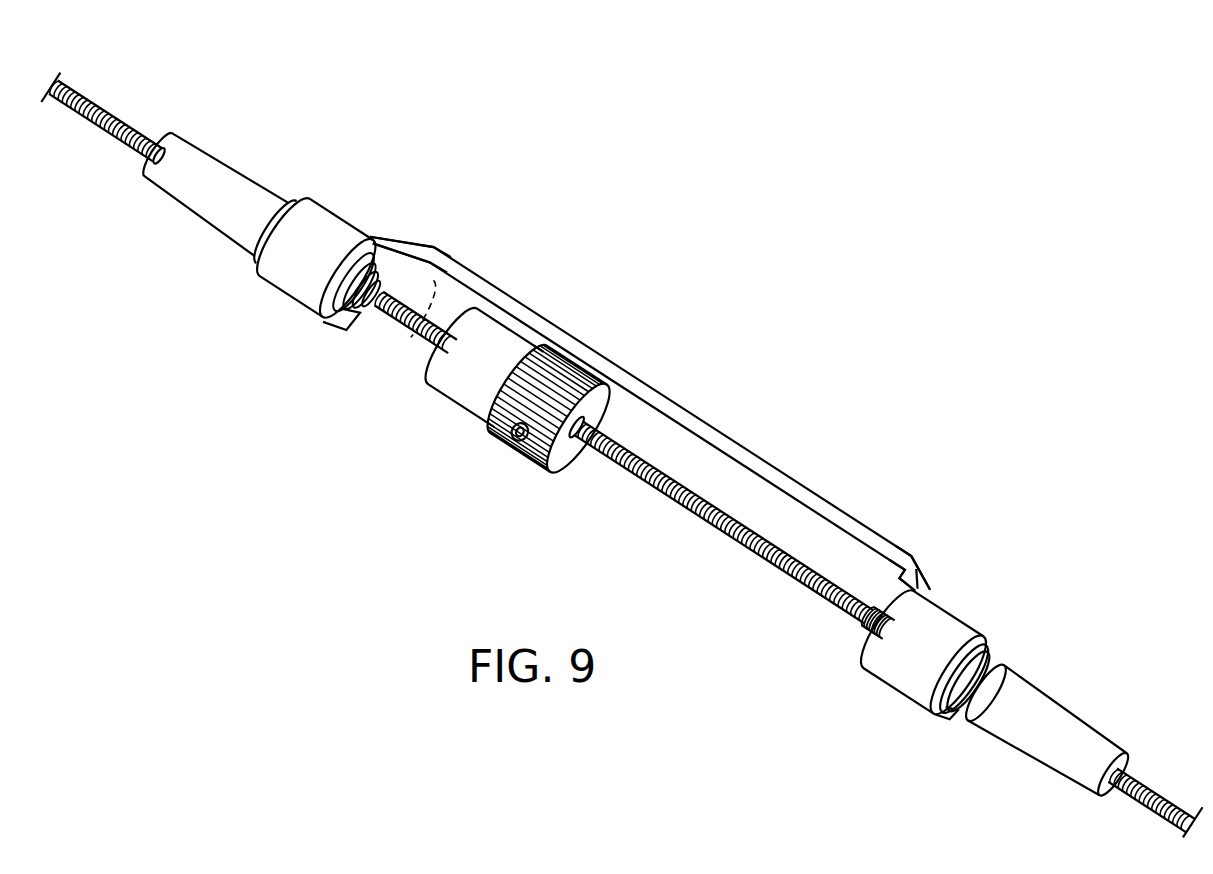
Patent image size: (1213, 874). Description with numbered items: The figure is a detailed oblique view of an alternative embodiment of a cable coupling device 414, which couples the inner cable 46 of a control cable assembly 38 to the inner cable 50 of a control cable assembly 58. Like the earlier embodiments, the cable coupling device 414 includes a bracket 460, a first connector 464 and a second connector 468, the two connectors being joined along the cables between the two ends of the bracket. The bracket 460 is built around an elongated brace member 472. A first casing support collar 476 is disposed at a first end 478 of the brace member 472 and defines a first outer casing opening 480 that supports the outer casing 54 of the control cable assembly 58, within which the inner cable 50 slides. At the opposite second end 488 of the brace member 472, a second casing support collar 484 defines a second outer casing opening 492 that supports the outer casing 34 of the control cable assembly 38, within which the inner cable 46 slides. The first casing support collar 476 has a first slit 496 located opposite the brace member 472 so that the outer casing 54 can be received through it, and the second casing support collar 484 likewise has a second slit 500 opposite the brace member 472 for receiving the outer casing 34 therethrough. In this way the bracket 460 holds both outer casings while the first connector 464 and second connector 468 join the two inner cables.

The control cable assembly 38 is at (251, 215).
The outer casing 34 is at (230, 183).
The inner cable 46 is at (96, 125).
The second casing support collar 484 is at (330, 220).
The second outer casing opening 492 is at (378, 235).
The second end of brace member 488 is at (427, 240).
The second slit 500 is at (337, 320).
The cable coupling device 414 is at (636, 472).
The bracket 460 is at (636, 472).
The elongated brace member 472 is at (733, 435).
The first end of brace member 478 is at (913, 553).
The first casing support collar 476 is at (956, 612).
The first outer casing opening 480 is at (995, 640).
The first slit 496 is at (938, 722).
The second connector 468 is at (432, 420).
The first connector 464 is at (522, 478).
The inner cable 50 is at (741, 547).
The outer casing 54 is at (1043, 746).
The control cable assembly 58 is at (887, 624).